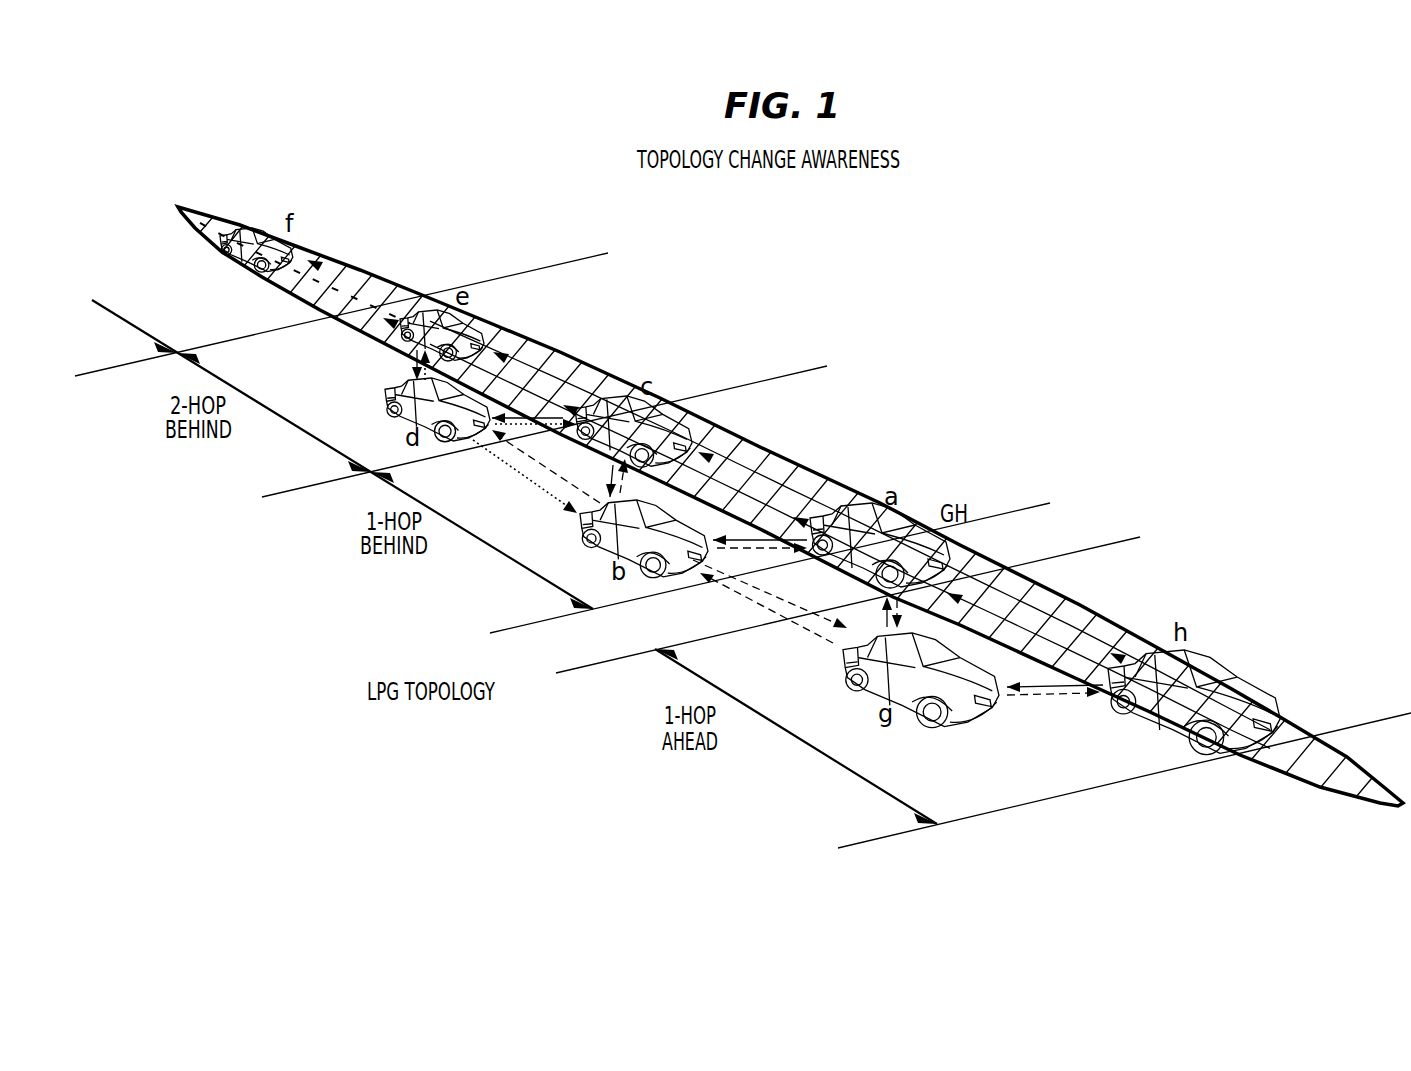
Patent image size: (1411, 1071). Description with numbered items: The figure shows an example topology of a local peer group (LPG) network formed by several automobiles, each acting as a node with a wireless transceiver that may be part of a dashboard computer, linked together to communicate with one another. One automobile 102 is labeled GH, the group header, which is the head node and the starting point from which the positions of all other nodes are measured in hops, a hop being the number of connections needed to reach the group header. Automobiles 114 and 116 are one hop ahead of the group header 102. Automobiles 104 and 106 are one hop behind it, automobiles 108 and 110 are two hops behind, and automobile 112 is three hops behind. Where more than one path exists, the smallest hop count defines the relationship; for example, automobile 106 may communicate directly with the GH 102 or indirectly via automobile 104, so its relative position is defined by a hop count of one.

The automobile (group header) 102 is at (865, 500).
The automobile 104 is at (580, 533).
The automobile 106 is at (633, 392).
The automobile 108 is at (388, 391).
The automobile 110 is at (493, 324).
The automobile 112 is at (257, 225).
The automobile 114 is at (953, 728).
The automobile 116 is at (1197, 658).